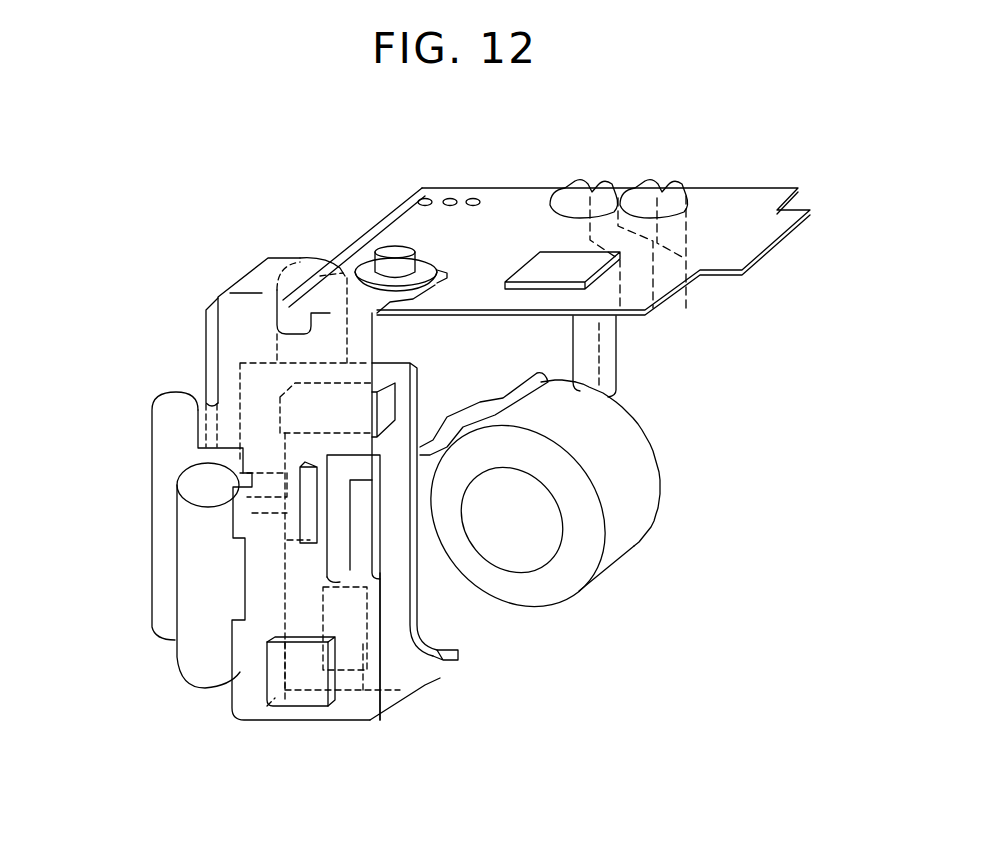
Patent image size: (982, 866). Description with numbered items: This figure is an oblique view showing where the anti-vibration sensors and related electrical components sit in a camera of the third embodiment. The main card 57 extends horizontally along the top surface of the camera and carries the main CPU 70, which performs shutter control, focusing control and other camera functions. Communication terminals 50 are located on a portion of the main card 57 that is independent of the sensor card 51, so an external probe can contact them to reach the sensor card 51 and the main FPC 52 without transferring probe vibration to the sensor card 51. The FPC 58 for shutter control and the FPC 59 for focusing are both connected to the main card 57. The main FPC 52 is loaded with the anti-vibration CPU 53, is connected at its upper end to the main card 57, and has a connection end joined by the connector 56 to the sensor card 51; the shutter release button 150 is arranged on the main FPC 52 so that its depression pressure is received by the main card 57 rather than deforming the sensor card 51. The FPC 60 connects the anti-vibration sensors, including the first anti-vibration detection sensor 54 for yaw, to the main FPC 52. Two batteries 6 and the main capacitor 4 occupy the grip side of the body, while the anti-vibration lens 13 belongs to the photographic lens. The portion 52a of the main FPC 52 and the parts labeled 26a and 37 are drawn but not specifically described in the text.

The main card 57 is at (747, 208).
The communication terminals 50 is at (472, 198).
The FPC for focusing 59 is at (577, 180).
The FPC for shutter control 58 is at (667, 182).
The main CPU 70 is at (543, 263).
The shutter release button 150 is at (388, 255).
The main capacitor 4 is at (322, 258).
The main FPC 52 is at (253, 283).
The battery 6 is at (177, 400).
The stepped hook portion 52a is at (250, 513).
The connector 56 is at (305, 542).
The bracket 26a is at (338, 528).
The FPC 60 is at (517, 389).
The roller 37 is at (613, 427).
The anti-vibration lens 13 is at (543, 553).
The sensor card 51 is at (425, 642).
The first anti-vibration detection sensor 54 is at (352, 647).
The anti-vibration CPU 53 is at (312, 707).